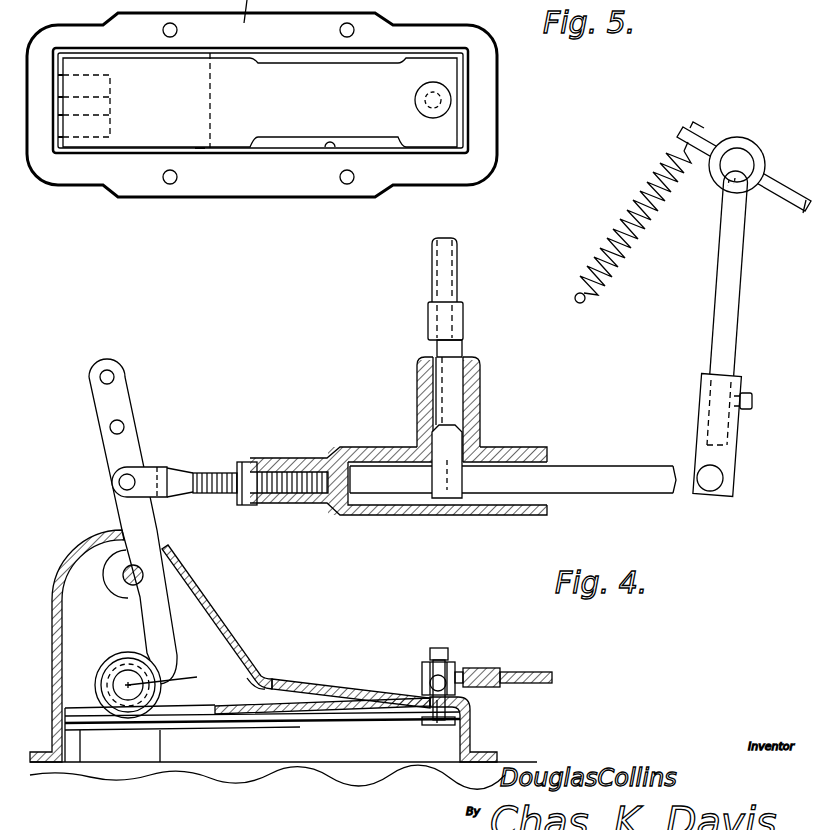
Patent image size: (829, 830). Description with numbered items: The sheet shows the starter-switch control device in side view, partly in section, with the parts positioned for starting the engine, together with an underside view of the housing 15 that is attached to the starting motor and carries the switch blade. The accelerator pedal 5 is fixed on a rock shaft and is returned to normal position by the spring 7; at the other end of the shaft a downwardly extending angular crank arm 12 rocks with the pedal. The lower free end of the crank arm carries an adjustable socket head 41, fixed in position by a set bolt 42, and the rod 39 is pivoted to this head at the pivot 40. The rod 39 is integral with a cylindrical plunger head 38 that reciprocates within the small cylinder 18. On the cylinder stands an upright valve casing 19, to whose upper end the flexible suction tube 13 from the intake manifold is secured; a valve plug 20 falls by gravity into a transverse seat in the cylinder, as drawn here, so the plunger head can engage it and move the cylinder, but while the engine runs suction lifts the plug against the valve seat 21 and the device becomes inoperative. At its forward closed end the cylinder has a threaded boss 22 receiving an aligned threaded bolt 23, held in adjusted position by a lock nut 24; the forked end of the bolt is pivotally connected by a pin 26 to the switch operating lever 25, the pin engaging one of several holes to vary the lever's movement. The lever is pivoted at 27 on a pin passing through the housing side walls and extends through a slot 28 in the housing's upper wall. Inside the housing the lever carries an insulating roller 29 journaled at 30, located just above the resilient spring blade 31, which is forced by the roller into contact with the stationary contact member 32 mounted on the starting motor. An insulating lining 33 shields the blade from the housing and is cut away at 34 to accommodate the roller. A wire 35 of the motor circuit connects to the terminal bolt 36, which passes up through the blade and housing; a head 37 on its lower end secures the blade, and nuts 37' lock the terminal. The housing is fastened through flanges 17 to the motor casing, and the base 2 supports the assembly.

In FIG. 4, the base 2 is at (280, 770).
In FIG. 4, the pedal 5 is at (789, 207).
In FIG. 4, the spring 7 is at (644, 227).
In FIG. 4, the crank arm 12 is at (737, 317).
In FIG. 4, the suction tube 13 is at (458, 290).
In FIG. 4, the supporting housing 15 is at (338, 685).
In FIG. 4, the flanges 17 is at (490, 755).
In FIG. 4, the cylinder 18 is at (525, 512).
In FIG. 4, the valve casing 19 is at (483, 393).
In FIG. 4, the valve plug 20 is at (445, 487).
In FIG. 4, the valve seat 21 is at (432, 357).
In FIG. 4, the threaded boss 22 is at (310, 508).
In FIG. 4, the threaded bolt 23 is at (200, 470).
In FIG. 4, the lock nut 24 is at (250, 505).
In FIG. 4, the switch operating lever 25 is at (120, 383).
In FIG. 4, the pin 26 is at (117, 477).
In FIG. 4, the pivot 27 is at (100, 548).
In FIG. 4, the slot 28 is at (182, 557).
In FIG. 5, the roller 29 is at (100, 143).
In FIG. 4, the roller 29 is at (107, 660).
In FIG. 4, the roller journal 30 is at (235, 678).
In FIG. 5, the spring blade 31 is at (260, 100).
In FIG. 4, the spring blade 31 is at (217, 727).
In FIG. 4, the stationary contact member 32 is at (128, 748).
In FIG. 5, the insulating lining 33 is at (332, 147).
In FIG. 4, the insulating lining 33 is at (273, 705).
In FIG. 5, the cut-away 34 is at (200, 152).
In FIG. 4, the cut-away 34 is at (247, 678).
In FIG. 4, the wire 35 is at (525, 672).
In FIG. 4, the terminal bolt 36 is at (440, 648).
In FIG. 5, the head 37 is at (399, 100).
In FIG. 4, the head 37 is at (409, 759).
In FIG. 4, the nuts 37' is at (471, 655).
In FIG. 4, the plunger head 38 is at (488, 482).
In FIG. 4, the rod 39 is at (600, 447).
In FIG. 4, the pivot 40 is at (712, 490).
In FIG. 4, the socket head 41 is at (734, 458).
In FIG. 4, the set bolt 42 is at (742, 390).